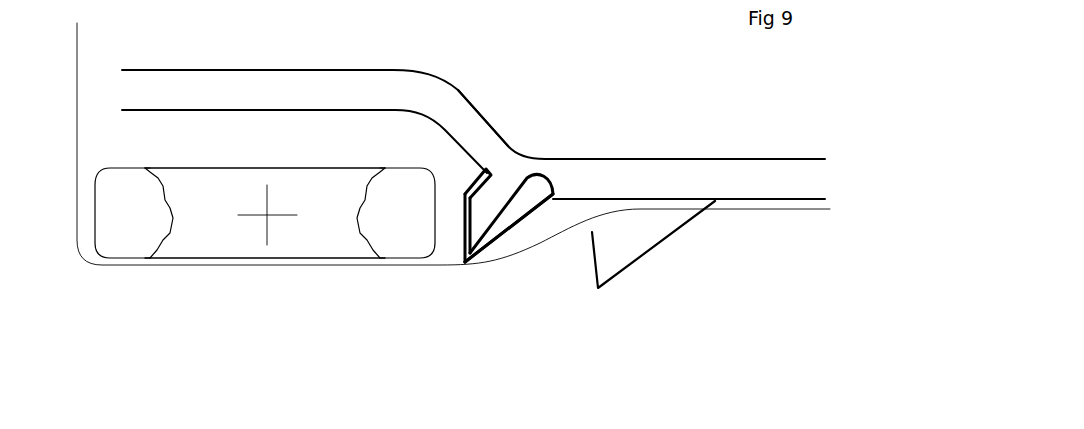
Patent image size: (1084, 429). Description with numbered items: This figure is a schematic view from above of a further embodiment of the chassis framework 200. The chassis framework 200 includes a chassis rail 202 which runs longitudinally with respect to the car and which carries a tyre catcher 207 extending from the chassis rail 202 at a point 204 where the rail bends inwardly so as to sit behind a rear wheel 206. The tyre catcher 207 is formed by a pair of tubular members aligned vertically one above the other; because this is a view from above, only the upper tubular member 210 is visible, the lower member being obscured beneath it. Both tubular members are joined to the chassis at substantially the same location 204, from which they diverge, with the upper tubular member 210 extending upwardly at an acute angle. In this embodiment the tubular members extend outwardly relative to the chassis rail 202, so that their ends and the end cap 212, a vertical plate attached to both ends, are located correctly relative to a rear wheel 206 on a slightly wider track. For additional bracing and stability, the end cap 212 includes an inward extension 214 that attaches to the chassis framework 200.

The chassis framework 200 is at (472, 88).
The chassis rail 202 is at (715, 158).
The point 204 is at (537, 161).
The rear wheel 206 is at (228, 260).
The tyre catcher 207 is at (500, 243).
The upper tubular member 210 is at (508, 212).
The end cap 212 is at (463, 226).
The inward extension 214 is at (467, 187).